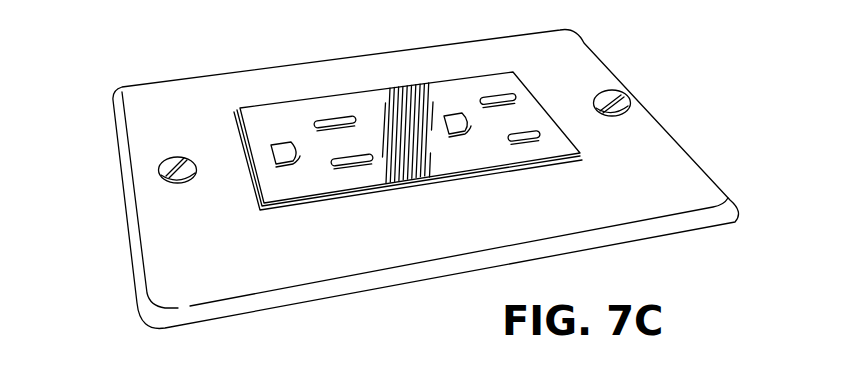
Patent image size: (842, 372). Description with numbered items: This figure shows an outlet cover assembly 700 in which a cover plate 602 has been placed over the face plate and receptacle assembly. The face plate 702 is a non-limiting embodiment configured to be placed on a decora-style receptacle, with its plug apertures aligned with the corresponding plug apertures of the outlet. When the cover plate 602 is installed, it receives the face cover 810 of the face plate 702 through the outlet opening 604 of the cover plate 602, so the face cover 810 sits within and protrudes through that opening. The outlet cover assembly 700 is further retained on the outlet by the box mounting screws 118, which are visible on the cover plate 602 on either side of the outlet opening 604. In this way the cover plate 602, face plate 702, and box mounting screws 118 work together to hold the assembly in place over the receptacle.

The outlet cover assembly 700 is at (130, 64).
The cover plate 602 is at (313, 263).
The outlet opening 604 is at (583, 157).
The face plate 702 is at (510, 82).
The face cover 810 is at (443, 90).
The box mounting screws 118 is at (606, 92).